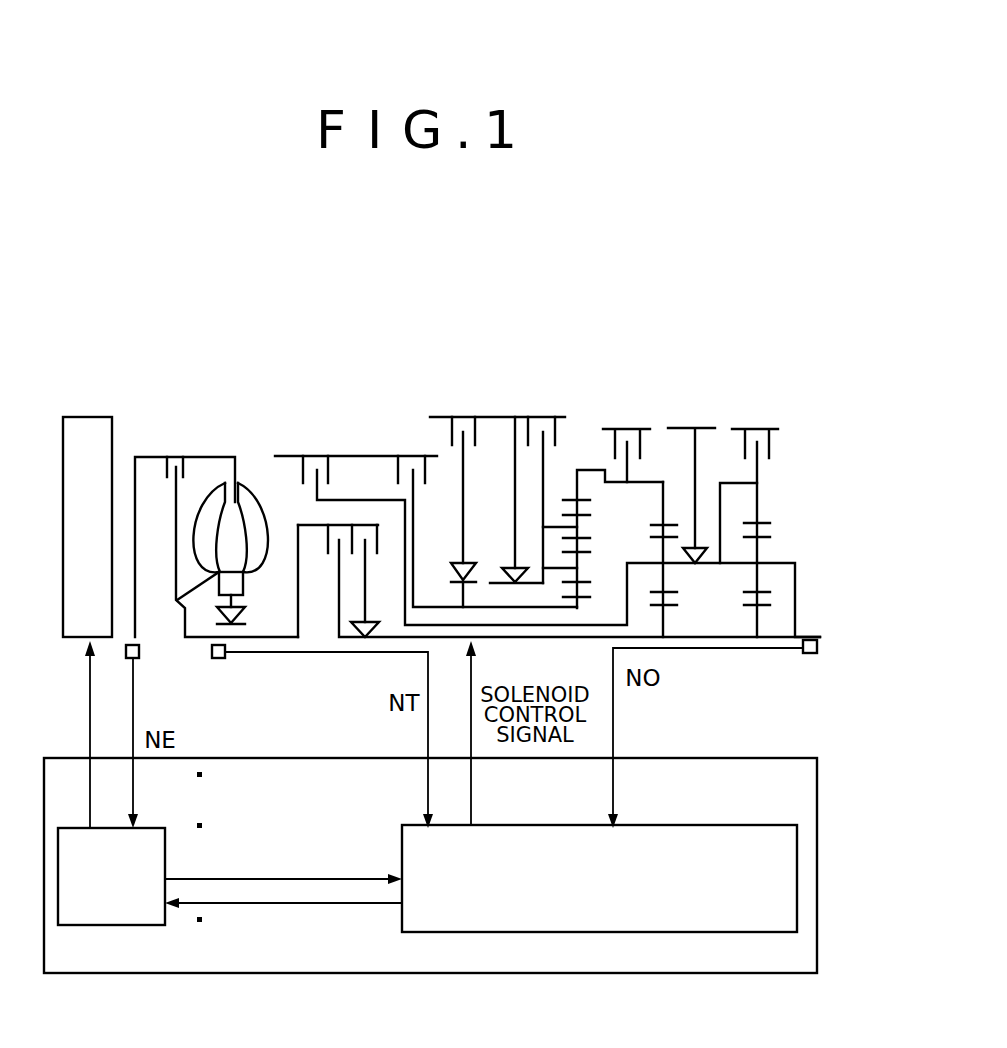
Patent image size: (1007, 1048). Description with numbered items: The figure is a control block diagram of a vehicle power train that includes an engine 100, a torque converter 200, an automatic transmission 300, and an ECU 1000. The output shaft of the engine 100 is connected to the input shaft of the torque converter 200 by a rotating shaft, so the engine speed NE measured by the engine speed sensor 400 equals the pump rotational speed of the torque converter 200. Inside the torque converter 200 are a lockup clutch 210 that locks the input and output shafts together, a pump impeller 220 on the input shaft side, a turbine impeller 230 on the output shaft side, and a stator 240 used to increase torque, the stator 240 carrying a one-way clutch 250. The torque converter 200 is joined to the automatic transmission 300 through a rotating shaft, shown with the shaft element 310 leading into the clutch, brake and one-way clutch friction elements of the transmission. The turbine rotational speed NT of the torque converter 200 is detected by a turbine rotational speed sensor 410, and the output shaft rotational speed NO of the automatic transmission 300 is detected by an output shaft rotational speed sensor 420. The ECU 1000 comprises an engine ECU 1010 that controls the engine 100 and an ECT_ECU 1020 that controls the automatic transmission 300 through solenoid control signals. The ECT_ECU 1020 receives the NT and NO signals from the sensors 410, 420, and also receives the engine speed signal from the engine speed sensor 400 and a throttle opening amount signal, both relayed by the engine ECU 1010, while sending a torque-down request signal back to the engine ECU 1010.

The engine 100 is at (82, 417).
The torque converter 200 is at (225, 538).
The lockup clutch 210 is at (167, 470).
The pump impeller 220 is at (243, 572).
The turbine impeller 230 is at (210, 489).
The stator 240 is at (215, 586).
The one-way clutch 250 is at (242, 613).
The automatic transmission 300 is at (547, 478).
The intermediate shaft 310 is at (559, 550).
The engine speed sensor 400 is at (137, 662).
The turbine rotational speed sensor 410 is at (220, 663).
The output shaft rotational speed sensor 420 is at (802, 652).
The ECU 1000 is at (430, 894).
The engine ECU 1010 is at (73, 925).
The ECT_ECU 1020 is at (573, 933).